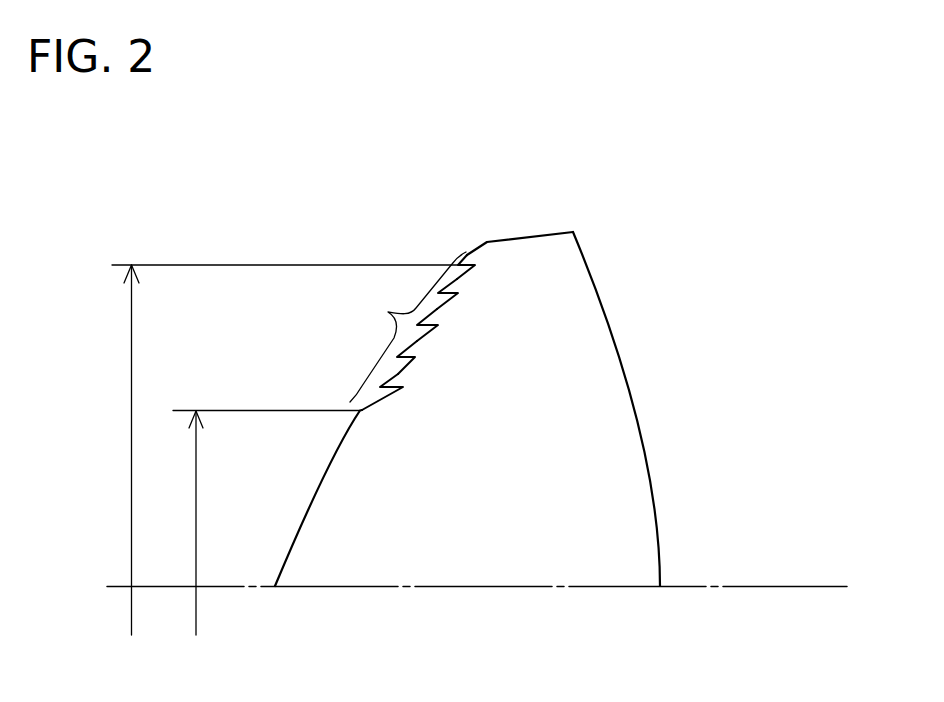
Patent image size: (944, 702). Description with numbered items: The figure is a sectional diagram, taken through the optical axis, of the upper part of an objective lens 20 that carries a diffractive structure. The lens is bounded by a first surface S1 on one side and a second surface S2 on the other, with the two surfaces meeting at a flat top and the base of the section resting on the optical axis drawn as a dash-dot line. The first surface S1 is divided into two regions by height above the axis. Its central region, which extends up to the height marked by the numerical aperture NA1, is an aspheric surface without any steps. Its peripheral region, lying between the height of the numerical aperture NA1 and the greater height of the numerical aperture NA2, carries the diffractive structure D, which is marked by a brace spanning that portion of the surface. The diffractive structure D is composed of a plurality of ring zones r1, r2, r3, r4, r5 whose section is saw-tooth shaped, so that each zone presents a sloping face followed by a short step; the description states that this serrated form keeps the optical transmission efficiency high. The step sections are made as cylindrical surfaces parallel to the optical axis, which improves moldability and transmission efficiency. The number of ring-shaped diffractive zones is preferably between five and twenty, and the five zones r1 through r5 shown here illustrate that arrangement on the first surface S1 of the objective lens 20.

The objective lens 20 is at (643, 245).
The first surface S1 is at (318, 478).
The second surface S2 is at (633, 385).
The ring zone r1 is at (393, 392).
The ring zone r2 is at (408, 363).
The ring zone r3 is at (425, 330).
The ring zone r4 is at (450, 293).
The ring zone r5 is at (472, 267).
The diffractive structure D is at (408, 327).
The numerical aperture NA1 is at (259, 532).
The numerical aperture NA2 is at (279, 458).